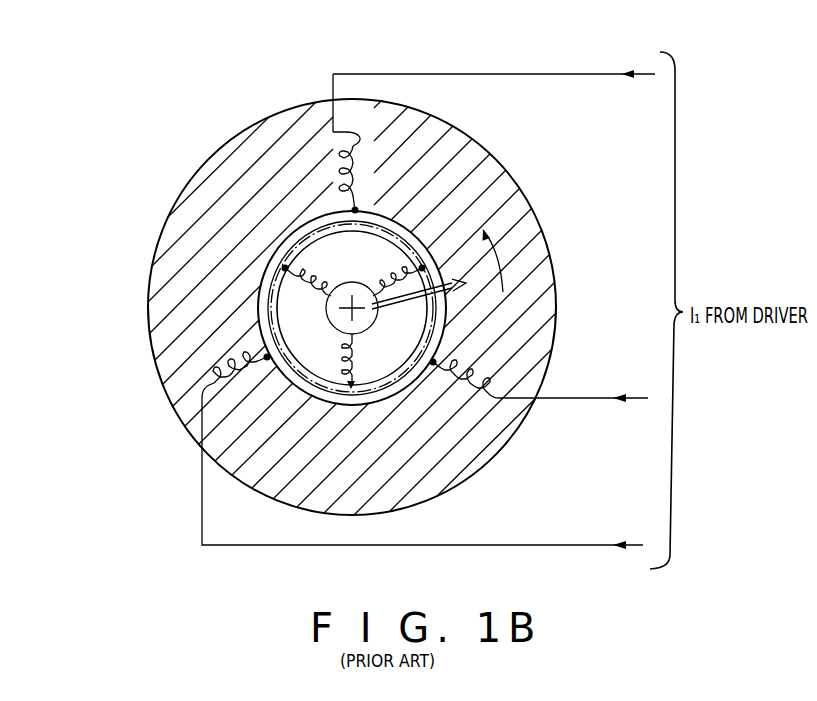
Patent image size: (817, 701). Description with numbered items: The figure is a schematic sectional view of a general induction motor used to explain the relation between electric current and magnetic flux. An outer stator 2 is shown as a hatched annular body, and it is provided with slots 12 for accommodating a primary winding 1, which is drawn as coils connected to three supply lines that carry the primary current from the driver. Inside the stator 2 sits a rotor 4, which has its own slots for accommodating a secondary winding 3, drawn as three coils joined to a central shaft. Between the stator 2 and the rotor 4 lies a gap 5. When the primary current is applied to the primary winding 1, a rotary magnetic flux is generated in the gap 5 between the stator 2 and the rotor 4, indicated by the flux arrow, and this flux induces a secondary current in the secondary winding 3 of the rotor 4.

The primary winding 1 is at (376, 167).
The stator 2 is at (285, 108).
The secondary winding 3 is at (318, 266).
The rotor 4 is at (263, 266).
The gap 5 is at (254, 302).
The slots 12 is at (384, 358).